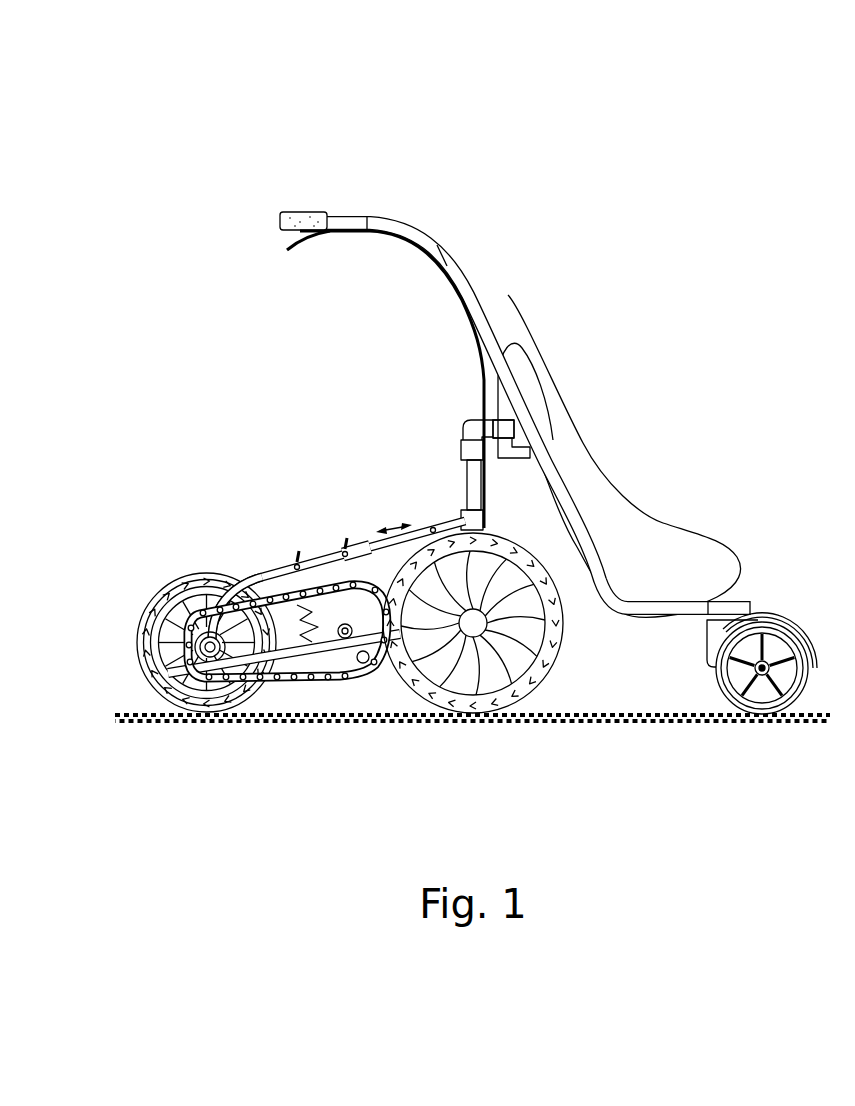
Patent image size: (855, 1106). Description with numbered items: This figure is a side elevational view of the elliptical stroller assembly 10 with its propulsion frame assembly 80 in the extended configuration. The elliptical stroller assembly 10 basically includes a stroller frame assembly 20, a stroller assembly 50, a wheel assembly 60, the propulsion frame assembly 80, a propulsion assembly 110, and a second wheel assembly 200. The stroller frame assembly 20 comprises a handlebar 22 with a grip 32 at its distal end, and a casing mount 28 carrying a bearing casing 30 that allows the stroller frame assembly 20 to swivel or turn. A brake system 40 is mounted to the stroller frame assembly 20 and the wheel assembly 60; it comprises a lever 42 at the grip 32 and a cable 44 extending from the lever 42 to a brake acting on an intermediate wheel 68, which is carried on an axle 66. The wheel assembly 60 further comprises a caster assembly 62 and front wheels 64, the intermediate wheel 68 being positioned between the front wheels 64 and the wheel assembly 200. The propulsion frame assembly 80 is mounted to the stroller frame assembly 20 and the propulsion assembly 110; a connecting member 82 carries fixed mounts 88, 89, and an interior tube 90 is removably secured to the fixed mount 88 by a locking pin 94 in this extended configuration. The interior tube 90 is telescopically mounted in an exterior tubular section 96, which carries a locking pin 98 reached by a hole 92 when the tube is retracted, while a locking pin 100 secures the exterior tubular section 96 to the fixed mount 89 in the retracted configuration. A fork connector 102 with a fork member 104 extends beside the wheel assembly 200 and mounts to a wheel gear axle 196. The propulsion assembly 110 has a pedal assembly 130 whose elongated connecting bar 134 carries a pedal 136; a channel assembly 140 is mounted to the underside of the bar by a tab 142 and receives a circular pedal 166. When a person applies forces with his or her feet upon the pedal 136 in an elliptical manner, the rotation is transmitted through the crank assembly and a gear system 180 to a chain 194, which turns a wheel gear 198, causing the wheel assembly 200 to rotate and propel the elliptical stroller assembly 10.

The elliptical stroller assembly 10 is at (747, 84).
The stroller frame assembly 20 is at (490, 292).
The handlebar 22 is at (424, 242).
The casing mount 28 is at (507, 404).
The bearing casing 30 is at (512, 427).
The grip 32 is at (307, 212).
The brake system 40 is at (280, 250).
The lever 42 is at (283, 238).
The cable 44 is at (453, 290).
The stroller assembly 50 is at (592, 440).
The wheel assembly 60 is at (761, 610).
The caster assembly 62 is at (707, 637).
The front wheels 64 is at (733, 695).
The axle 66 is at (475, 628).
The intermediate wheel 68 is at (557, 630).
The propulsion frame assembly 80 is at (345, 538).
The connecting member 82 is at (466, 428).
The fixed mount 88 is at (468, 442).
The fixed mount 89 is at (484, 426).
The interior tube 90 is at (425, 528).
The hole 92 is at (433, 525).
The locking pin 94 is at (483, 520).
The exterior tubular section 96 is at (297, 553).
The locking pin 98 is at (326, 532).
The locking pin 100 is at (299, 563).
The fork connector 102 is at (273, 572).
The fork member 104 is at (257, 572).
The propulsion assembly 110 is at (233, 664).
The pedal assembly 130 is at (172, 632).
The elongated connecting bar 134 is at (420, 635).
The pedal 136 is at (205, 705).
The channel assembly 140 is at (316, 688).
The tab 142 is at (300, 677).
The circular pedal 166 is at (364, 663).
The gear system 180 is at (386, 675).
The chain 194 is at (292, 690).
The wheel gear axle 196 is at (172, 690).
The wheel gear 198 is at (176, 648).
The second wheel assembly 200 is at (133, 616).